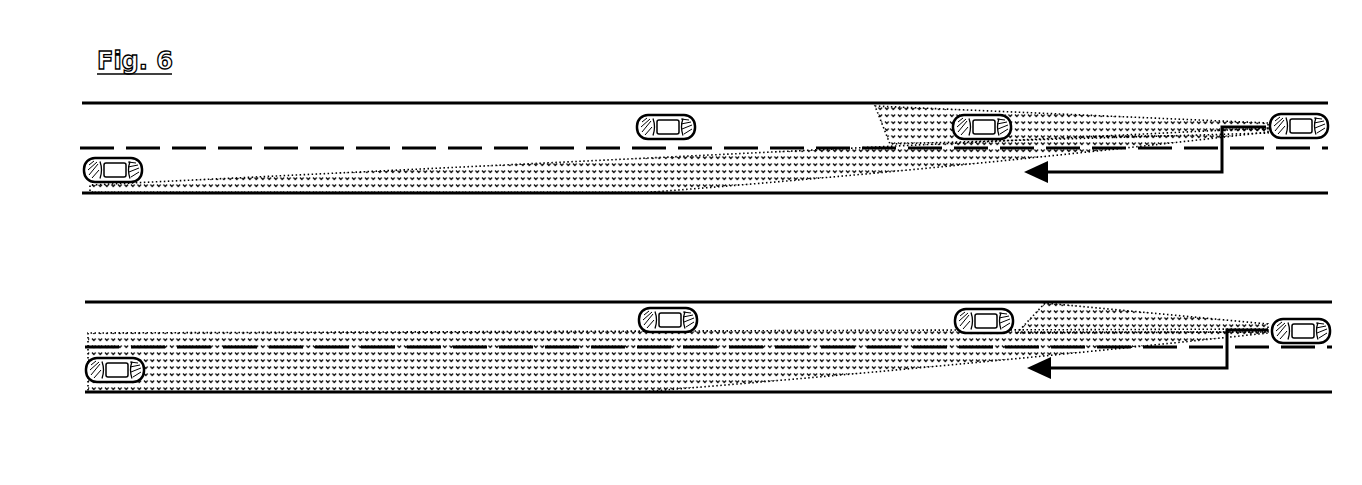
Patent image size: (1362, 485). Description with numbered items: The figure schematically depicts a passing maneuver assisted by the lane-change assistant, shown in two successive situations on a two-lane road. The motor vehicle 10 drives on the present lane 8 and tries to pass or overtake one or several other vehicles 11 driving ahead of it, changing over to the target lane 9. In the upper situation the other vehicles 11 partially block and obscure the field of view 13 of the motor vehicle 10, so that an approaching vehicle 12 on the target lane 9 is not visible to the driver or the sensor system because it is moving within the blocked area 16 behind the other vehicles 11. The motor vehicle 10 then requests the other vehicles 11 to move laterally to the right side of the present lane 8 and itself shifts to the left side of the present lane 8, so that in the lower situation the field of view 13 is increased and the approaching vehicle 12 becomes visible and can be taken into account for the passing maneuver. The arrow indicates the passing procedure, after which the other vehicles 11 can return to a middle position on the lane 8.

The present lane 8 is at (1349, 138).
The target lane 9 is at (1268, 186).
The motor vehicle 10 is at (1309, 89).
The other vehicles 11 is at (671, 92).
The approaching vehicle 12 is at (117, 201).
The field of view 13 is at (1062, 136).
The blocked area 16 is at (829, 142).